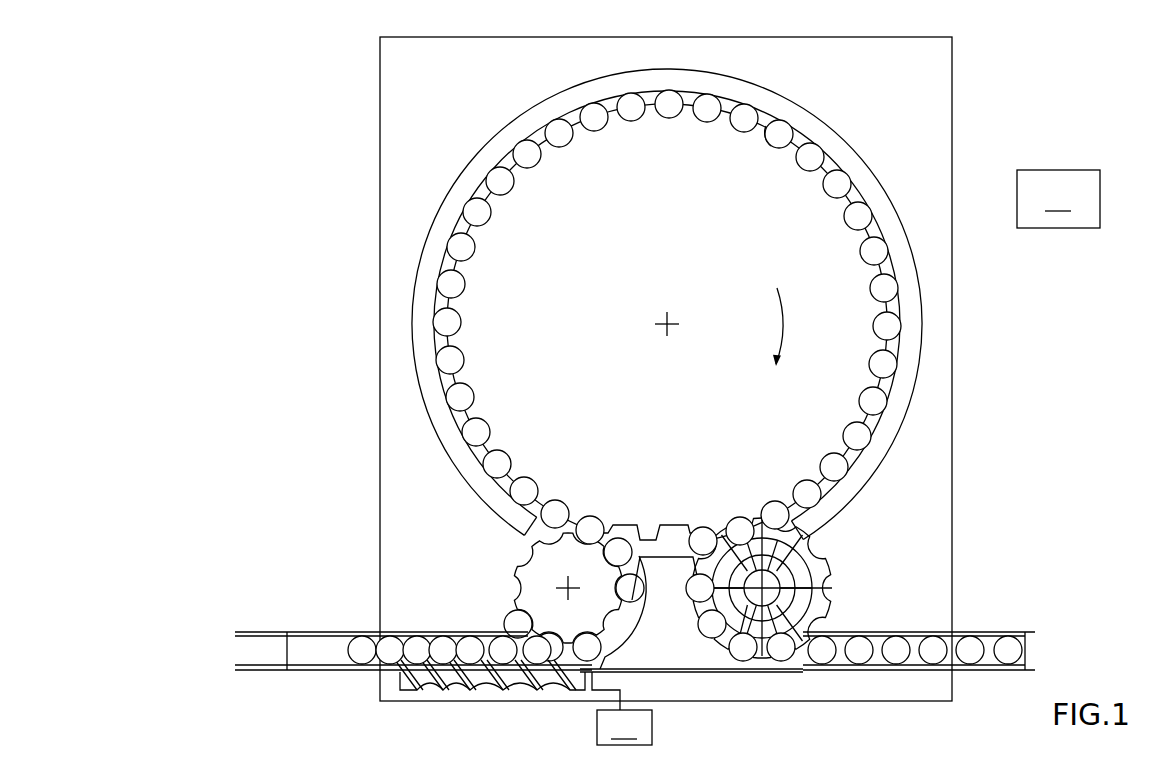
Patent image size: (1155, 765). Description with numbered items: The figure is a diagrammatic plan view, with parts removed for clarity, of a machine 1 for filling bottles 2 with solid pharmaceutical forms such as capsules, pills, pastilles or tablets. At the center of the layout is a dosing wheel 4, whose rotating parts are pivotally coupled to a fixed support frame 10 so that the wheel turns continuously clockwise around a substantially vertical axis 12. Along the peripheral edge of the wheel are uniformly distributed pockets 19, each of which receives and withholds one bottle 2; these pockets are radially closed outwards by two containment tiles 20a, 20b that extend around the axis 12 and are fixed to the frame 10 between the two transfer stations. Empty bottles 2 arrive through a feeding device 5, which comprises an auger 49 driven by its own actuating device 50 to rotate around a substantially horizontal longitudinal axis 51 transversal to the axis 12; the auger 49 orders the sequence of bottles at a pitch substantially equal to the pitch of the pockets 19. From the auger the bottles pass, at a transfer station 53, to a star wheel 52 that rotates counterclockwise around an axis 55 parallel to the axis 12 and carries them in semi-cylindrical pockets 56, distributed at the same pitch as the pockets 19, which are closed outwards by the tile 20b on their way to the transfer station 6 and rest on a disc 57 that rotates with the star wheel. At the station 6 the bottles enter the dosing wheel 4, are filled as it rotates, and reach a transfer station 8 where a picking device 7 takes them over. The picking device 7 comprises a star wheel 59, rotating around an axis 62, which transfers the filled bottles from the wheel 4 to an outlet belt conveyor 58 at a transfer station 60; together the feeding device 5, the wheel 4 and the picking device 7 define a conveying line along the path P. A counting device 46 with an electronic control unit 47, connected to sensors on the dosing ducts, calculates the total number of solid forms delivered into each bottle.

The machine 1 is at (1042, 106).
The bottles 2 is at (657, 98).
The dosing wheel 4 is at (705, 302).
The feeding device 5 is at (386, 678).
The transfer station 6 is at (552, 545).
The picking device 7 is at (957, 612).
The transfer station 8 is at (788, 587).
The fixed support frame 10 is at (895, 52).
The axis 12 is at (660, 321).
The pockets 19 is at (775, 138).
The containment tile 20a is at (862, 178).
The containment tile 20b is at (708, 660).
The counting device 46 is at (1084, 169).
The electronic control unit 47 is at (1058, 200).
The auger 49 is at (487, 680).
The actuating device 50 is at (624, 727).
The axis 51 is at (600, 675).
The star wheel 52 is at (537, 562).
The transfer station 53 is at (634, 653).
The axis 55 is at (560, 588).
The pockets 56 is at (557, 530).
The disc 57 is at (517, 616).
The outlet belt conveyor 58 is at (988, 633).
The star wheel 59 is at (806, 562).
The transfer station 60 is at (793, 673).
The axis 62 is at (758, 660).